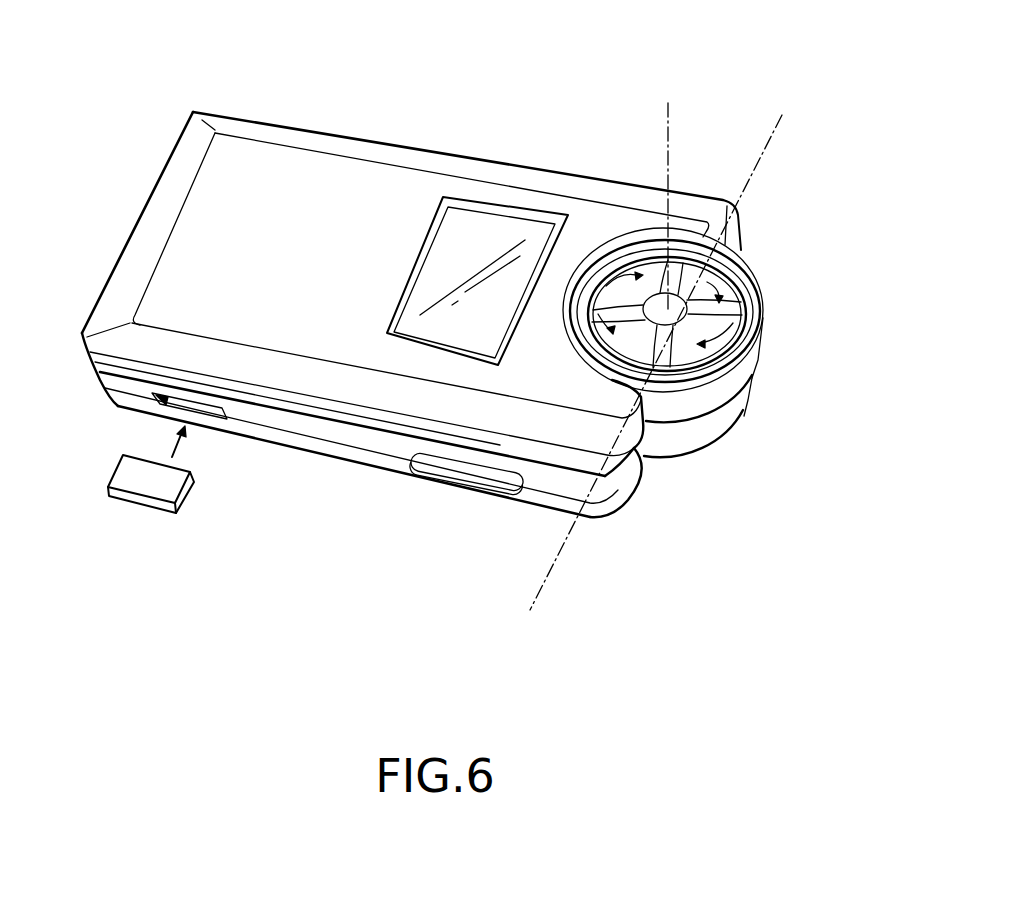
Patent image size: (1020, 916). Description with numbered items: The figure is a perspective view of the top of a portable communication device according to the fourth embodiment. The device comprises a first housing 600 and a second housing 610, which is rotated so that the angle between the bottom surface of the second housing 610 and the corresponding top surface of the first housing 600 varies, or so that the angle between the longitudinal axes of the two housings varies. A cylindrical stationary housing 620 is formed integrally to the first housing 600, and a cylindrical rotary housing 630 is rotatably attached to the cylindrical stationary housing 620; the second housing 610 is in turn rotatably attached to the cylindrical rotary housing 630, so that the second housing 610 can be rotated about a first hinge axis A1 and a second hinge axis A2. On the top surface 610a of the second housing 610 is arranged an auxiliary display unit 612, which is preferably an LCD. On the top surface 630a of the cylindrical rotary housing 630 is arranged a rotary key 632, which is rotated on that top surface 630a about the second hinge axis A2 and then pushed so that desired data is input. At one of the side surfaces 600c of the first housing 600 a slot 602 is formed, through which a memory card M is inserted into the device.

The first housing 600 is at (376, 464).
The side surface of the first housing 600c is at (307, 440).
The slot 602 is at (165, 400).
The second housing 610 is at (412, 130).
The top surface of the second housing 610a is at (323, 180).
The auxiliary display unit 612 is at (505, 232).
The cylindrical stationary housing 620 is at (712, 432).
The cylindrical rotary housing 630 is at (733, 378).
The top surface of the cylindrical rotary housing 630a is at (745, 283).
The rotary key 632 is at (729, 320).
The memory card M is at (153, 495).
The first hinge axis A1 is at (770, 137).
The second hinge axis A2 is at (667, 122).